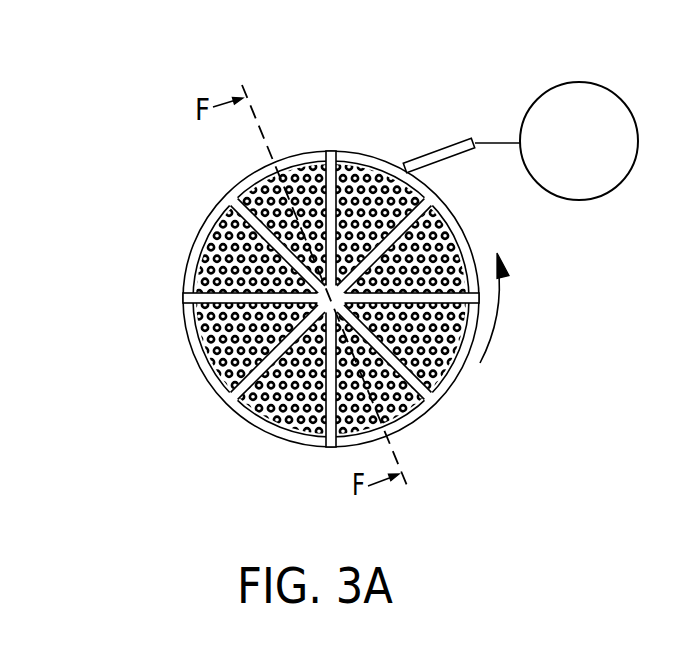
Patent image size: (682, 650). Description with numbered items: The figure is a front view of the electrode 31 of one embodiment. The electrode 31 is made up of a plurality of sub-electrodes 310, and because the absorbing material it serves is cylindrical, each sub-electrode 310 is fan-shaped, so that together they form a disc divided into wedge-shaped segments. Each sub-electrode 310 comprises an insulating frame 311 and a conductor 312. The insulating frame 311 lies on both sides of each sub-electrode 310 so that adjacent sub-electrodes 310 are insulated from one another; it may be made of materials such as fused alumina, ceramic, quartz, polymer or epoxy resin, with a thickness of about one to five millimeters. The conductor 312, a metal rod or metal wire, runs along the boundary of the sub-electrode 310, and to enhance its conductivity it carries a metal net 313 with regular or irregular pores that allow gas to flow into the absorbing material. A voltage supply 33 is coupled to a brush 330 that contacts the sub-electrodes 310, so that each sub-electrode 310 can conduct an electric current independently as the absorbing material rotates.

The electrode 31 is at (128, 170).
The sub-electrode 310 is at (246, 186).
The insulating frame 311 is at (330, 152).
The conductor 312 is at (380, 162).
The metal net 313 is at (373, 214).
The brush 330 is at (433, 152).
The voltage supply 33 is at (600, 85).